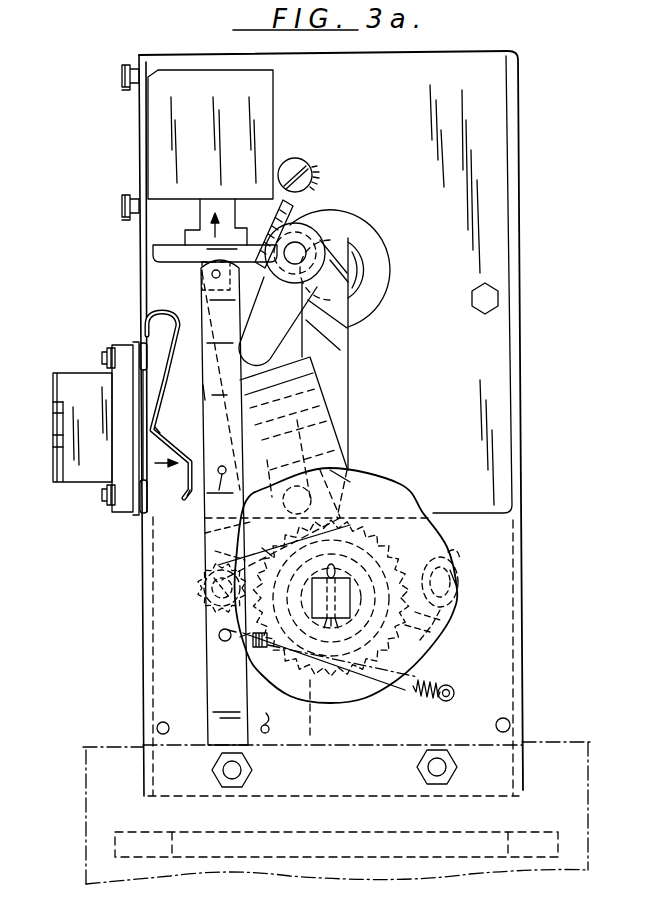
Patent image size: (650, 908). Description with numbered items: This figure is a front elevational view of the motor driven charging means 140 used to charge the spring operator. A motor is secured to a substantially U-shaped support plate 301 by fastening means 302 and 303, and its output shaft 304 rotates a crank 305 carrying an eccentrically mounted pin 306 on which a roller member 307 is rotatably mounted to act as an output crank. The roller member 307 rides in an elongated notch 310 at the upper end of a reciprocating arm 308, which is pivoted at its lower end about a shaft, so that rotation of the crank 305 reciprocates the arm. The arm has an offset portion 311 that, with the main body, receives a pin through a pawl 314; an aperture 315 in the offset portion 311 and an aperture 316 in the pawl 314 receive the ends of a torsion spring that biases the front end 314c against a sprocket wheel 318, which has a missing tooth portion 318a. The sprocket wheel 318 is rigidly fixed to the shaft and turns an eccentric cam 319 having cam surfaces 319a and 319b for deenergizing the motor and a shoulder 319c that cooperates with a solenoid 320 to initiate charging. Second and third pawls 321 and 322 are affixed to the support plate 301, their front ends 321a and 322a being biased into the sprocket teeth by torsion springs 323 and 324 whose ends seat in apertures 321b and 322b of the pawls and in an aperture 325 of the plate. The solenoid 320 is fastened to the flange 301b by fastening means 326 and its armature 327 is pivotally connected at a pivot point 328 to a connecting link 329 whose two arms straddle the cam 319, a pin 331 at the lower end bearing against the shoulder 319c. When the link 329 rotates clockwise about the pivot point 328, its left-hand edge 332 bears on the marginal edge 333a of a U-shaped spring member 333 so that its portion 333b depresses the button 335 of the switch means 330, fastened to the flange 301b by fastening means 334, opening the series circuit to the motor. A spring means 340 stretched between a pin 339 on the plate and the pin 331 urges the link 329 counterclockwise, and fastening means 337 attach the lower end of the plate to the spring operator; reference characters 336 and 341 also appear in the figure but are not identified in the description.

The motor driven charging means 140 is at (522, 68).
The support plate 301 is at (520, 200).
The support means flange 301b is at (140, 142).
The fastening means 302 is at (478, 315).
The fastening means 303 is at (302, 159).
The output shaft 304 is at (356, 266).
The crank 305 is at (326, 222).
The eccentrically mounted pin 306 is at (294, 242).
The roller member 307 is at (306, 228).
The reciprocating arm 308 is at (349, 352).
The elongated notch 310 is at (278, 321).
The offset portion 311 is at (342, 450).
The pawl 314 is at (331, 454).
The front end of pawl 314c is at (362, 480).
The aperture 315 is at (270, 553).
The aperture 316 is at (297, 418).
The sprocket wheel 318 is at (325, 714).
The missing tooth portion 318a is at (356, 527).
The eccentric cam 319 is at (427, 512).
The cam surface 319a is at (453, 580).
The cam surface 319b is at (215, 552).
The shoulder 319c is at (217, 641).
The solenoid 320 is at (264, 105).
The second pawl 321 is at (210, 571).
The front end of second pawl 321a is at (205, 533).
The aperture 321b is at (205, 614).
The third pawl 322 is at (459, 605).
The front end of third pawl 322a is at (423, 633).
The aperture 322b is at (457, 555).
The torsion spring 323 is at (208, 586).
The torsion spring 324 is at (445, 622).
The aperture 325 is at (432, 546).
The fastening means 326 is at (119, 73).
The armature 327 is at (194, 232).
The pivot point 328 is at (212, 275).
The connecting link 329 is at (206, 322).
The switch means 330 is at (73, 376).
The pin 331 is at (222, 640).
The left-hand edge 332 is at (204, 392).
The U-shaped spring member 333 is at (180, 358).
The marginal edge 333a is at (190, 494).
The portion of spring member 333b is at (153, 430).
The fastening means 334 is at (103, 345).
The depressible button 335 is at (146, 432).
The direction arrow 336 is at (169, 477).
The fastening means 337 is at (253, 771).
The pin 339 is at (454, 693).
The spring means 340 is at (410, 692).
The direction arrow 341 is at (220, 228).